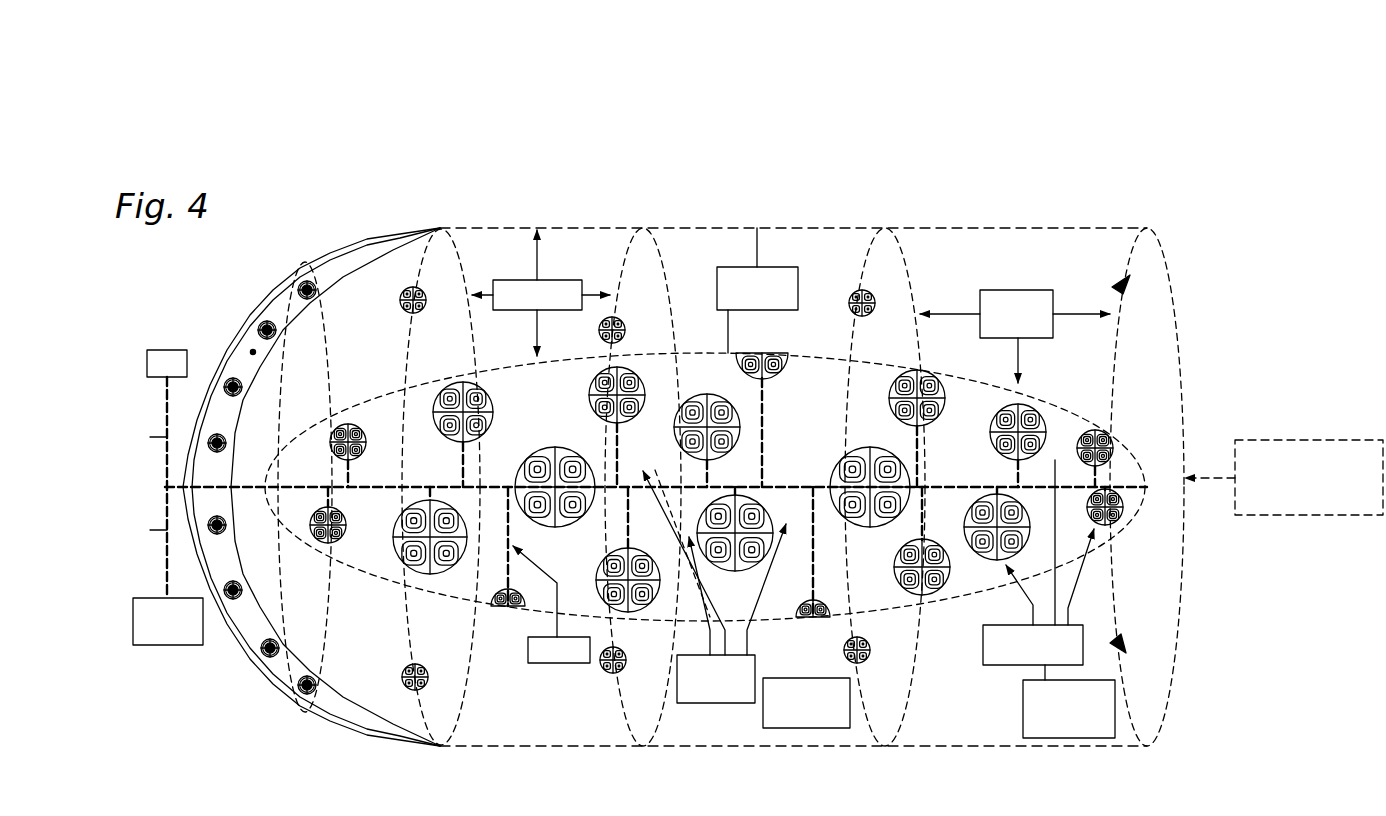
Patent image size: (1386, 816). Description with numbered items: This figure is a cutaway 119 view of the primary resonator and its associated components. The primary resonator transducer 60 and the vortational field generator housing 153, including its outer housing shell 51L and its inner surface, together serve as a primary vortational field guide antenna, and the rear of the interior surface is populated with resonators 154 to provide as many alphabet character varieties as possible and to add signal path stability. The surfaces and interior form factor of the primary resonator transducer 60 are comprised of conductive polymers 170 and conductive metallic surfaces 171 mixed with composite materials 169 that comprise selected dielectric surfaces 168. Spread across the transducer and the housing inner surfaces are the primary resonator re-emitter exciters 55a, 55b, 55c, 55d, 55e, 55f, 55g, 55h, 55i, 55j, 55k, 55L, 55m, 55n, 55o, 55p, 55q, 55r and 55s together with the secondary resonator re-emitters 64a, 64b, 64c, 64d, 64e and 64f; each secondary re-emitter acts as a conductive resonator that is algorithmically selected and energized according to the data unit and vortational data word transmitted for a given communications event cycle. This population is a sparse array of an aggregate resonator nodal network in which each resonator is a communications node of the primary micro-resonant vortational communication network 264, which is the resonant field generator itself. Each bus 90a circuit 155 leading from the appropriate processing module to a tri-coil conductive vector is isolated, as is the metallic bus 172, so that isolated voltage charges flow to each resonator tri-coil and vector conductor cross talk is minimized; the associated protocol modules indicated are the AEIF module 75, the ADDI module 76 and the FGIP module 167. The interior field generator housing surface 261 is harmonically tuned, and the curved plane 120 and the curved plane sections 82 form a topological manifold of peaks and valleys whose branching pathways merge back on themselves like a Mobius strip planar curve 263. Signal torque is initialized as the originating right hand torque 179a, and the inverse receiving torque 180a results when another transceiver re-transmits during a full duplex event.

The leading edge skin 51L is at (392, 238).
The vortational field generator housing 153 is at (340, 264).
The resonators 154 is at (287, 303).
The Mobius strip planar curve 263 is at (253, 352).
The bus 90a is at (167, 350).
The Alphabet Decoding De-Interleaving Re-Formatting (ADDI) module 76 is at (145, 439).
The Alphabet Encoding Interleaving Formatting (AEIF) module 75 is at (145, 532).
The Field Generation Interleave Phasing Re-Emit Burst Generation (FGIP) module 167 is at (165, 487).
The metallic bus 172 is at (150, 645).
The ribs 82 is at (330, 323).
The primary resonator transducer 60 is at (387, 394).
The cutaway 119 is at (526, 278).
The interior field generator housing surface 261 is at (766, 267).
The curved plane 120 is at (1012, 290).
The direction arrow 179a is at (1119, 290).
The direction arrow 180a is at (1143, 634).
The circuit 155 is at (550, 663).
The dielectric surfaces 168 is at (706, 703).
The composite materials 169 is at (763, 705).
The conductive polymers 170 is at (1004, 665).
The conductive metallic surfaces 171 is at (1023, 706).
The primary micro-resonant vortational communication network 264 is at (1272, 515).
The resonator re-emitter exciter 55a is at (332, 447).
The resonator re-emitter exciter 55b is at (309, 537).
The resonator re-emitter exciter 55c is at (460, 433).
The resonator re-emitter exciter 55d is at (432, 575).
The resonator re-emitter exciter 55e is at (502, 602).
The resonator re-emitter exciter 55f is at (576, 446).
The resonator re-emitter exciter 55g is at (591, 395).
The resonator re-emitter exciter 55h is at (604, 574).
The resonator re-emitter exciter 55i is at (696, 400).
The resonator re-emitter exciter 55j is at (742, 354).
The resonator re-emitter exciter 55k is at (732, 571).
The resonator re-emitter exciter 55L is at (796, 610).
The resonator re-emitter exciter 55m is at (842, 462).
The resonator re-emitter exciter 55n is at (892, 406).
The resonator re-emitter exciter 55o is at (896, 562).
The resonator re-emitter exciter 55p is at (998, 452).
The resonator re-emitter exciter 55q is at (991, 561).
The resonator re-emitter exciter 55r is at (1112, 445).
The resonator re-emitter exciter 55s is at (1118, 518).
The secondary resonator re-emitter 64a is at (412, 297).
The secondary resonator re-emitter 64b is at (598, 331).
The secondary resonator re-emitter 64c is at (403, 676).
The secondary resonator re-emitter 64d is at (640, 650).
The secondary resonator re-emitter 64e is at (848, 305).
The secondary resonator re-emitter 64f is at (868, 654).